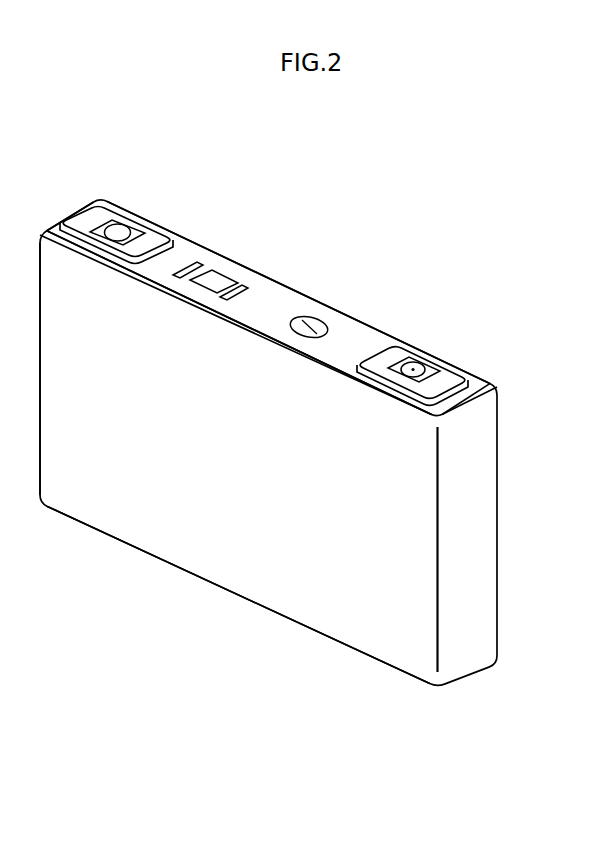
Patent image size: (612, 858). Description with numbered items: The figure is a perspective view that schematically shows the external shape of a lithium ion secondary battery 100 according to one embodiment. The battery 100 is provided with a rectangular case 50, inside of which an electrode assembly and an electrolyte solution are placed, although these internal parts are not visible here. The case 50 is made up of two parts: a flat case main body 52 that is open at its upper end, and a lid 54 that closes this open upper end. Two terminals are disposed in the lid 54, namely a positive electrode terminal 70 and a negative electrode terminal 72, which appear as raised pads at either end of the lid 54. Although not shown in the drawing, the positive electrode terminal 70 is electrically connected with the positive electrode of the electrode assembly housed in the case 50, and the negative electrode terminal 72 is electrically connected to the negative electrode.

The lithium ion secondary battery 100 is at (500, 185).
The case 50 is at (282, 568).
The case main body 52 is at (188, 532).
The lid 54 is at (267, 290).
The positive electrode terminal 70 is at (422, 368).
The negative electrode terminal 72 is at (123, 230).